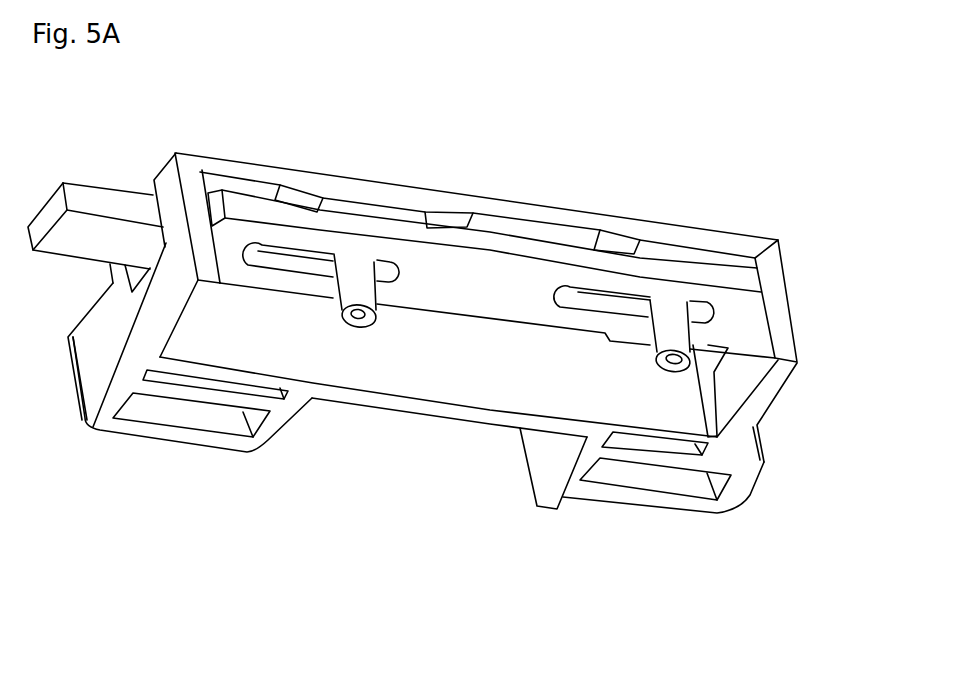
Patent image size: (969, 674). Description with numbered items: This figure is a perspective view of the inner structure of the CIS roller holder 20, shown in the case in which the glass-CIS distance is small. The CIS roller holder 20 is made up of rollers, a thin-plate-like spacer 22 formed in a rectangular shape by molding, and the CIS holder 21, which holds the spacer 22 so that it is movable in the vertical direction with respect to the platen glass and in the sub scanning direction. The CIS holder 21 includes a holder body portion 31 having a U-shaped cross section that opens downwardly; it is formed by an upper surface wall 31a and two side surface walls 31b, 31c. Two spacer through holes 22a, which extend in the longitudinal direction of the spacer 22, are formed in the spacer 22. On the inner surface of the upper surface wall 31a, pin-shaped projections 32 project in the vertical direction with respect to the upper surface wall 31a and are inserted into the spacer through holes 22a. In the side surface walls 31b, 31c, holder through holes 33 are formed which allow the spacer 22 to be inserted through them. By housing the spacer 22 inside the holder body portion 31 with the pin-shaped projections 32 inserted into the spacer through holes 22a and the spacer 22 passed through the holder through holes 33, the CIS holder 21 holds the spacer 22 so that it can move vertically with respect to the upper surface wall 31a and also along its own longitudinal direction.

The CIS roller holder 20 is at (444, 498).
The CIS holder 21 is at (517, 383).
The spacer 22 is at (457, 290).
The spacer through hole 22a is at (307, 262).
The holder body portion 31 is at (555, 209).
The upper surface wall 31a is at (422, 194).
The side surface wall 31b is at (193, 250).
The side surface wall 31c is at (777, 295).
The pin-shaped projection 32 is at (358, 312).
The holder through hole 33 is at (132, 274).